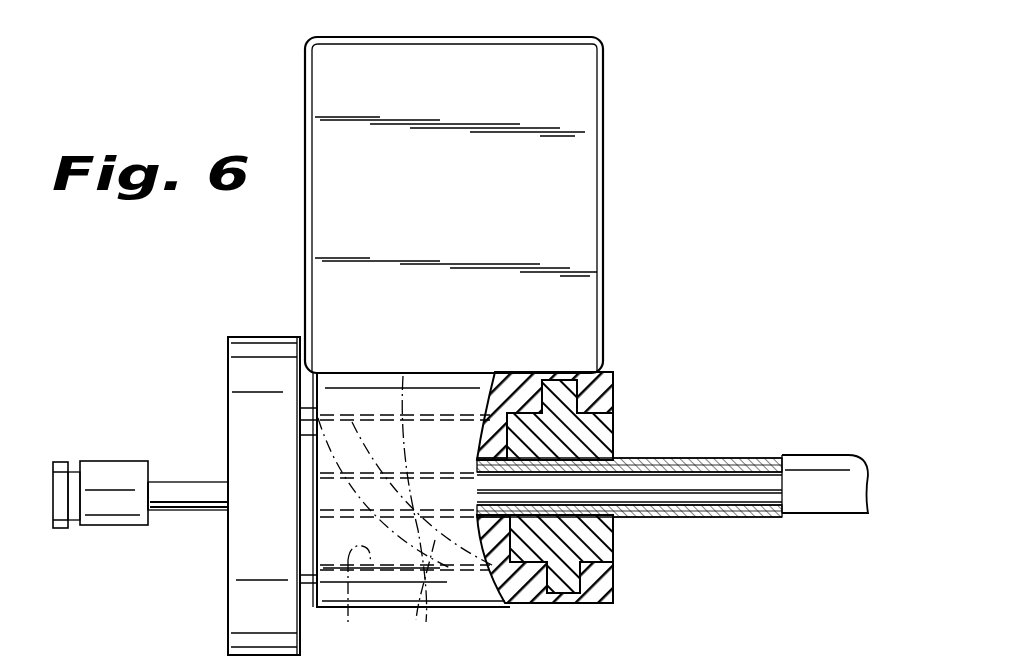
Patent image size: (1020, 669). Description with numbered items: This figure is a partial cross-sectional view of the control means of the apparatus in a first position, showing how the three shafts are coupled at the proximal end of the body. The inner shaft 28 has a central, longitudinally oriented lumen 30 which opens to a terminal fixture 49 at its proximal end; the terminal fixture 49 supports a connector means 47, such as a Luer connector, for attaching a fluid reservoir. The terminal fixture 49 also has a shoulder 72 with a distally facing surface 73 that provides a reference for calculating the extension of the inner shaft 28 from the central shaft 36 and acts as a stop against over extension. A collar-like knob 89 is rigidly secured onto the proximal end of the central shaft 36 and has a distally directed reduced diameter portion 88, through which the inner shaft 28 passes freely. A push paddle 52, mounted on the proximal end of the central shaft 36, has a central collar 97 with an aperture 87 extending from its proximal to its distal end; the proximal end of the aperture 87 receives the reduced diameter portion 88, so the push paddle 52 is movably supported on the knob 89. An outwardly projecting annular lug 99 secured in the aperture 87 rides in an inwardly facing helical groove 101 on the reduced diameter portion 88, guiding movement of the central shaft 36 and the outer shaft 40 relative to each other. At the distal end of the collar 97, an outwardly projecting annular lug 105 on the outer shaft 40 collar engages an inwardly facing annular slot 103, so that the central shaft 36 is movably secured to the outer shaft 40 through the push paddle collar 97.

The inner shaft 28 is at (188, 490).
The lumen 30 is at (868, 457).
The central shaft 36 is at (690, 457).
The outer shaft 40 is at (645, 457).
The connector means 47 is at (60, 460).
The terminal fixture 49 is at (100, 416).
The push paddle 52 is at (598, 188).
The shoulder 72 is at (107, 512).
The surface 73 is at (150, 522).
The aperture 87 is at (348, 615).
The reduced diameter portion 88 is at (302, 455).
The collar-like knob 89 is at (228, 370).
The central collar 97 is at (577, 377).
The annular lug 99 is at (403, 376).
The helical groove 101 is at (414, 600).
The annular slot 103 is at (560, 595).
The annular lug 105 is at (558, 380).